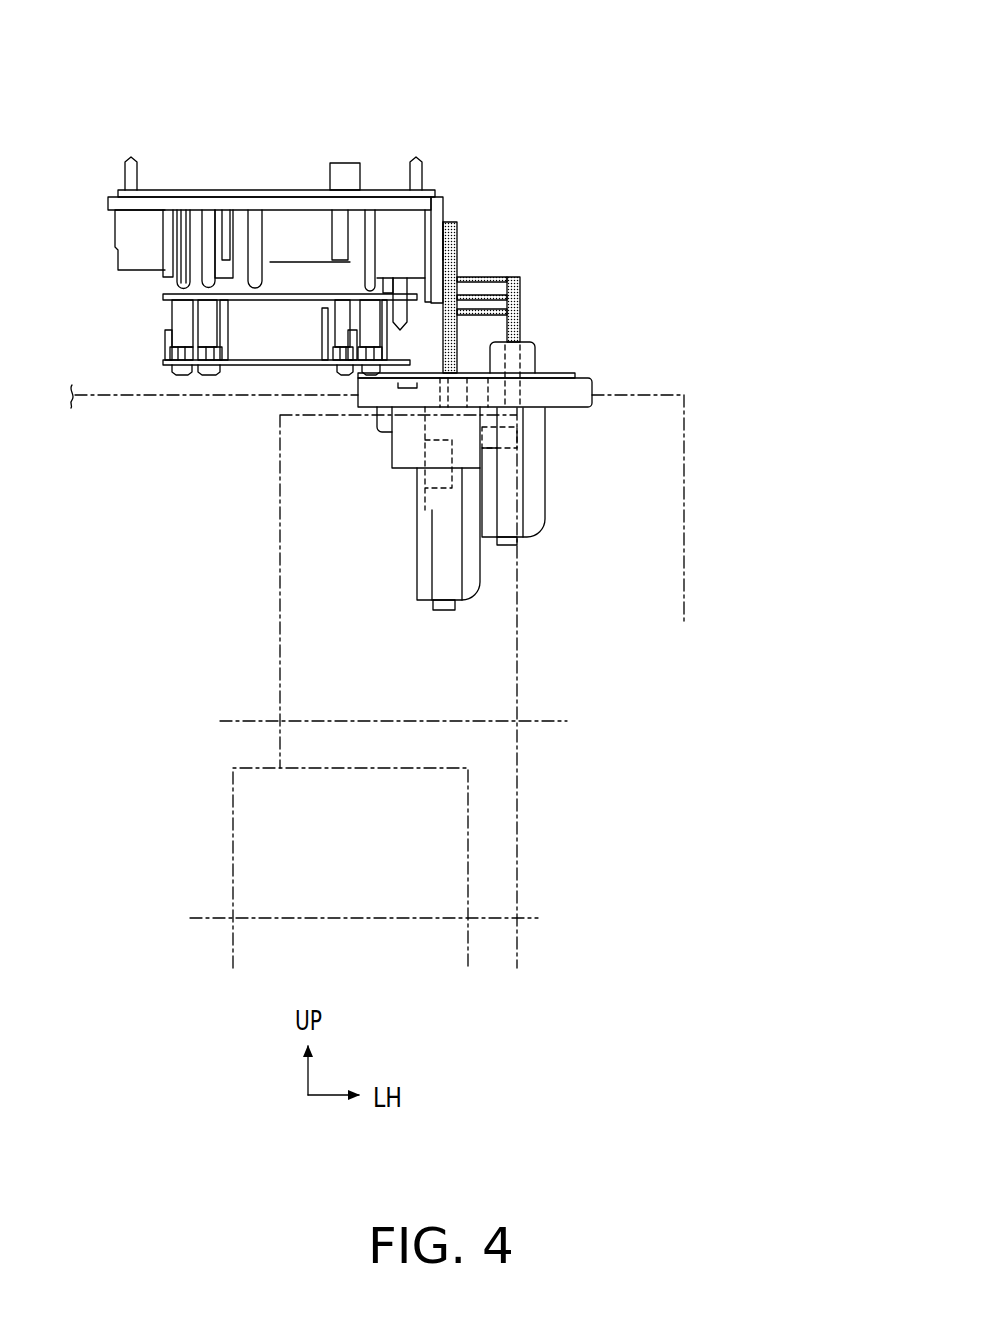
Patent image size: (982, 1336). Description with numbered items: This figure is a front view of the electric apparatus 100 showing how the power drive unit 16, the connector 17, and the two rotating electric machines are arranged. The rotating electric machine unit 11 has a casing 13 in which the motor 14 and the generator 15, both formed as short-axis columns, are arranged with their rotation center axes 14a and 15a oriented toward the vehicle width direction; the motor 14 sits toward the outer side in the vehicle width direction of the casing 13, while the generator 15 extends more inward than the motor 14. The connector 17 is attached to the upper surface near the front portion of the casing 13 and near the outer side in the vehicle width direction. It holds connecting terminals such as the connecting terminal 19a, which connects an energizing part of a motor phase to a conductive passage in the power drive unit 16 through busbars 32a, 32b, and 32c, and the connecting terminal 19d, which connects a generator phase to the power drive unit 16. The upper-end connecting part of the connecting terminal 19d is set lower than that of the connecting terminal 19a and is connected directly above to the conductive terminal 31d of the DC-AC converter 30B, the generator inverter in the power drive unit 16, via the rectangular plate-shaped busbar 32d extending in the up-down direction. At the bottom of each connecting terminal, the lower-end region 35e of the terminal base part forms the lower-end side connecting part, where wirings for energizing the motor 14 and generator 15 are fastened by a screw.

The electric apparatus 100 is at (559, 96).
The DC-AC converter 30B is at (270, 190).
The power drive unit 16 is at (466, 202).
The conductive terminal 31d is at (445, 243).
The busbar 32d is at (450, 266).
The busbar 32c is at (483, 277).
The busbar 32b is at (492, 296).
The busbar 32a is at (497, 309).
The connector 17 is at (598, 364).
The connecting terminal 19a is at (510, 396).
The connecting terminal 19d is at (443, 433).
The lower-end region of the terminal base part 35e is at (487, 500).
The rotating electric machine unit 11 is at (696, 445).
The casing 13 is at (687, 527).
The motor 14 is at (280, 632).
The rotation center axis 14a is at (481, 722).
The generator 15 is at (233, 853).
The rotation center axis 15a is at (481, 918).